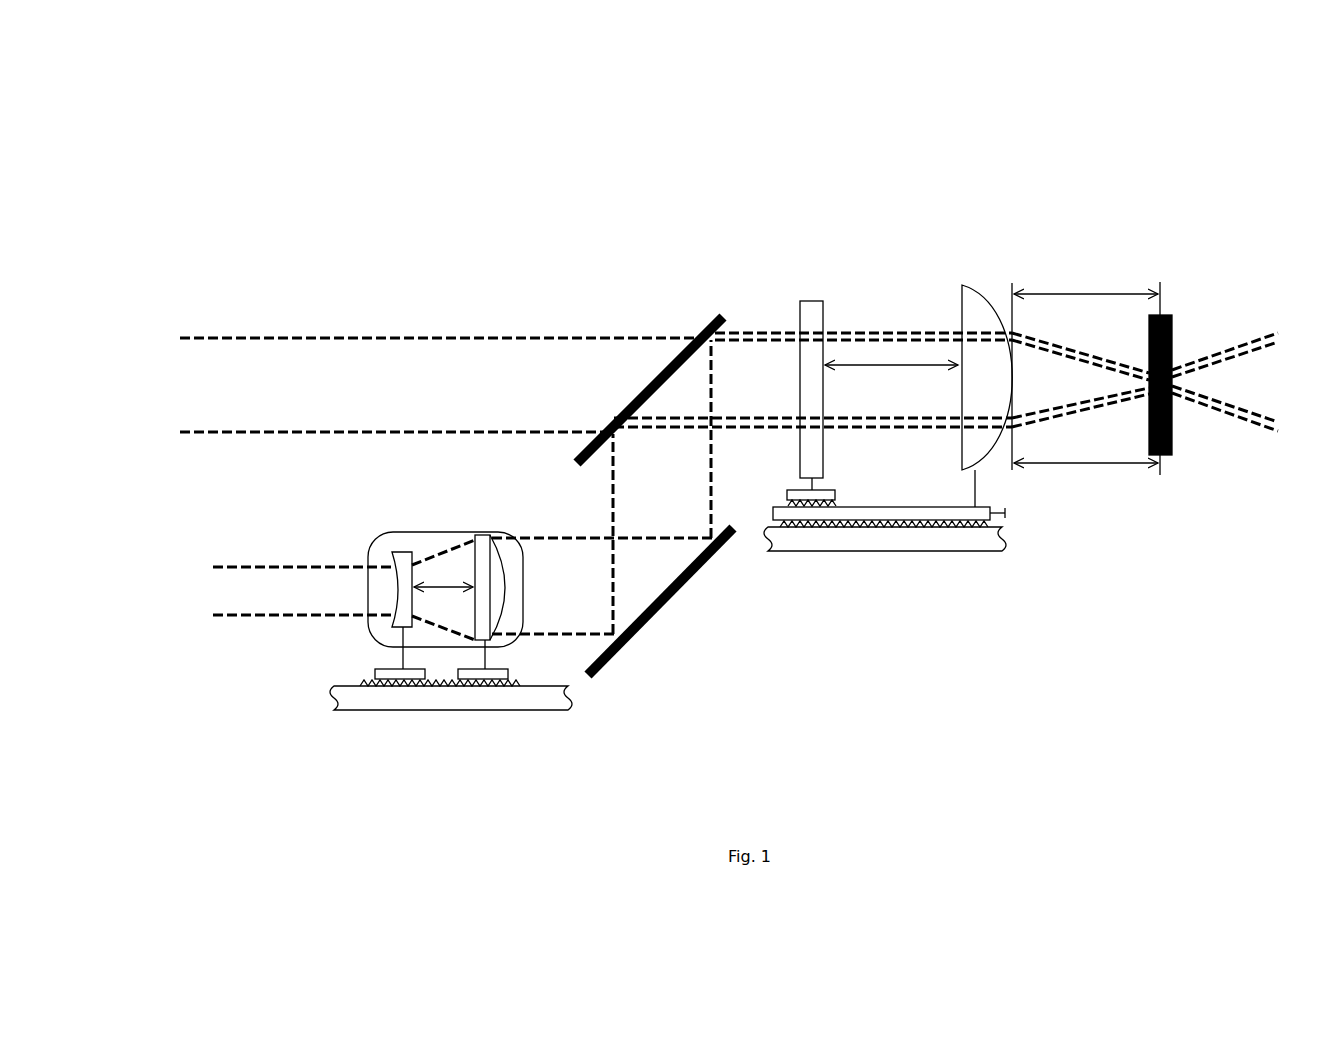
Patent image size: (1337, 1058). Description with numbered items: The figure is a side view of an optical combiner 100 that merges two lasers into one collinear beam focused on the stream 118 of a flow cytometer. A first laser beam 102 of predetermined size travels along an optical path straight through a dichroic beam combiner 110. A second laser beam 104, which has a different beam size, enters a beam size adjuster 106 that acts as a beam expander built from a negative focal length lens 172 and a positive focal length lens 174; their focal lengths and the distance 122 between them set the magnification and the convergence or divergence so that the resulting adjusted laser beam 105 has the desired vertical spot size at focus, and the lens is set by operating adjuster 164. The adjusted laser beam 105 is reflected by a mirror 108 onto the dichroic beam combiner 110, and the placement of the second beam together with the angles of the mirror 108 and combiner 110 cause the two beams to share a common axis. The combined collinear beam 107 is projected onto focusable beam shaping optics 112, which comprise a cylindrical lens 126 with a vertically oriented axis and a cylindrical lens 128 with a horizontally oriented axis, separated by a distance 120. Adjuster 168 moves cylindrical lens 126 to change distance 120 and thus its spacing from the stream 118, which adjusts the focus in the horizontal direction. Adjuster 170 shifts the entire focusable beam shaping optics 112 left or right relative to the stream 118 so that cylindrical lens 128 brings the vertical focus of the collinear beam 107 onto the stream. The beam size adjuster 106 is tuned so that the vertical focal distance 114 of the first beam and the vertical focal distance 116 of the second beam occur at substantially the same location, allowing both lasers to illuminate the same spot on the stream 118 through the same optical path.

The optical combiner 100 is at (1062, 683).
The first laser beam 102 is at (281, 333).
The second laser beam 104 is at (285, 566).
The adjusted laser beam 105 is at (573, 636).
The beam size adjuster 106 is at (398, 635).
The collinear beam 107 is at (748, 303).
The mirror 108 is at (672, 600).
The dichroic beam combiner 110 is at (713, 318).
The focusable beam shaping optics 112 is at (926, 423).
The vertical focal distance 114 is at (1137, 275).
The vertical focal distance 116 is at (1108, 468).
The stream 118 is at (1180, 430).
The distance 120 is at (858, 365).
The distance 122 is at (440, 583).
The cylindrical lens 126 is at (804, 300).
The cylindrical lens 128 is at (963, 290).
The adjuster 164 is at (375, 670).
The adjuster 168 is at (878, 482).
The adjuster 170 is at (985, 505).
The negative focal length lens 172 is at (392, 585).
The positive focal length lens 174 is at (490, 556).